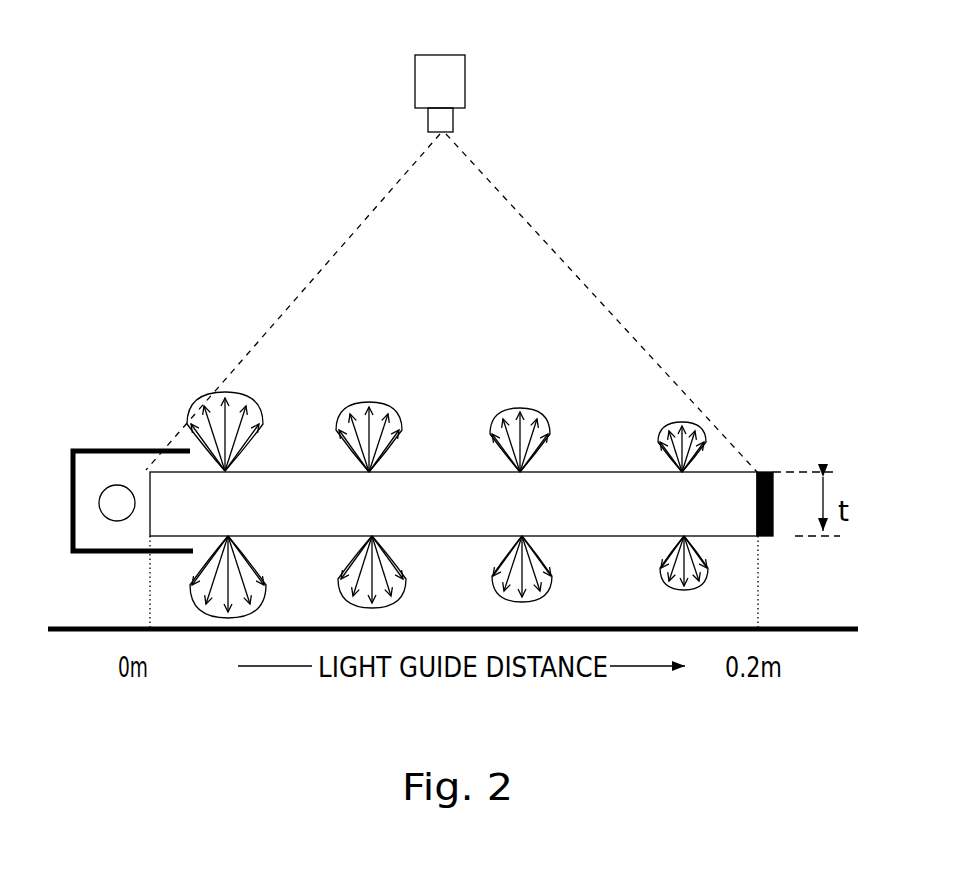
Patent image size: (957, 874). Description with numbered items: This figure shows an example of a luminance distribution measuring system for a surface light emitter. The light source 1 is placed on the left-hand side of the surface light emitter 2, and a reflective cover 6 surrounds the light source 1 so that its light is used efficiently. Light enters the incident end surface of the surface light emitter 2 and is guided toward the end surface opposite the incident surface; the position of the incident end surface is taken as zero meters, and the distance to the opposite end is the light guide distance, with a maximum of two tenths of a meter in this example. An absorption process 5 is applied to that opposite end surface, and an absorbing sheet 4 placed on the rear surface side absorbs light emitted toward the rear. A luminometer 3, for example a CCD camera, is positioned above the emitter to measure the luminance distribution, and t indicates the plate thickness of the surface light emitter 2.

The light source 1 is at (110, 505).
The surface light emitter 2 is at (585, 472).
The luminometer 3 is at (465, 77).
The absorbing sheet 4 is at (850, 634).
The absorption process 5 is at (763, 472).
The reflective cover 6 is at (106, 450).